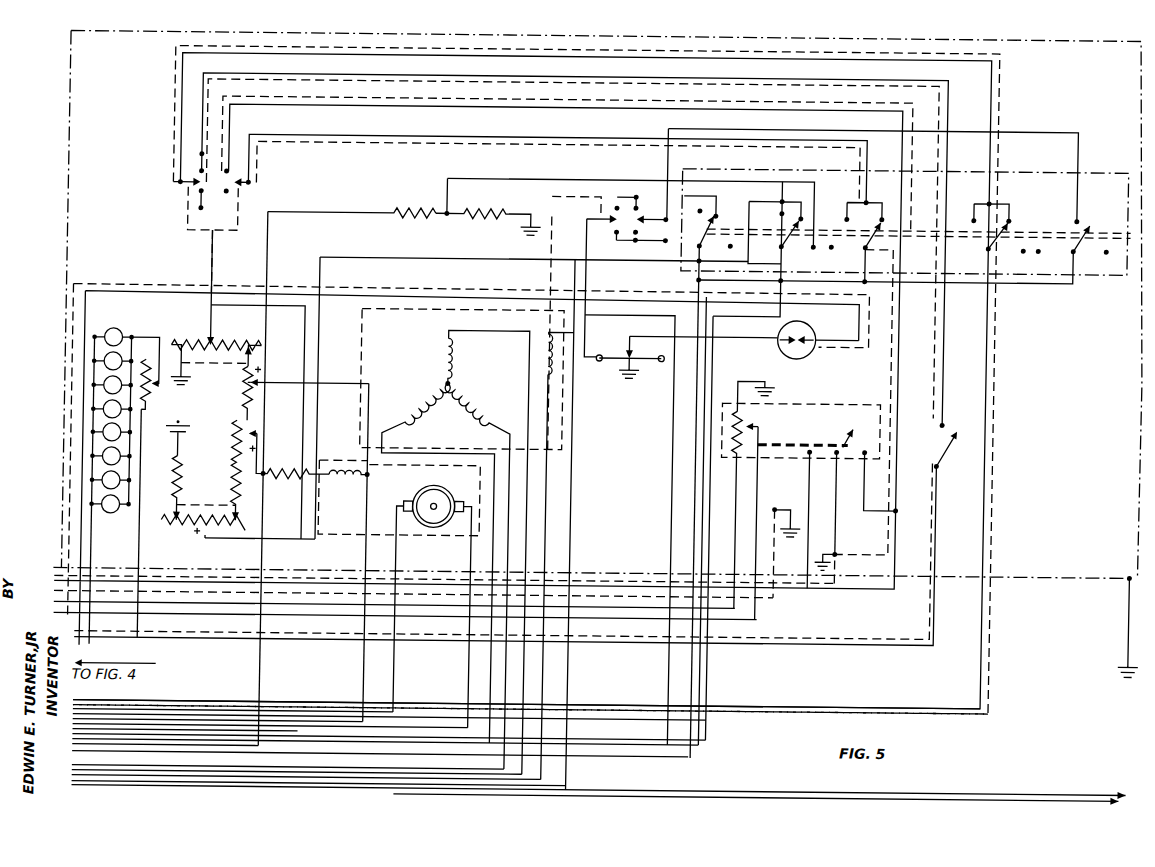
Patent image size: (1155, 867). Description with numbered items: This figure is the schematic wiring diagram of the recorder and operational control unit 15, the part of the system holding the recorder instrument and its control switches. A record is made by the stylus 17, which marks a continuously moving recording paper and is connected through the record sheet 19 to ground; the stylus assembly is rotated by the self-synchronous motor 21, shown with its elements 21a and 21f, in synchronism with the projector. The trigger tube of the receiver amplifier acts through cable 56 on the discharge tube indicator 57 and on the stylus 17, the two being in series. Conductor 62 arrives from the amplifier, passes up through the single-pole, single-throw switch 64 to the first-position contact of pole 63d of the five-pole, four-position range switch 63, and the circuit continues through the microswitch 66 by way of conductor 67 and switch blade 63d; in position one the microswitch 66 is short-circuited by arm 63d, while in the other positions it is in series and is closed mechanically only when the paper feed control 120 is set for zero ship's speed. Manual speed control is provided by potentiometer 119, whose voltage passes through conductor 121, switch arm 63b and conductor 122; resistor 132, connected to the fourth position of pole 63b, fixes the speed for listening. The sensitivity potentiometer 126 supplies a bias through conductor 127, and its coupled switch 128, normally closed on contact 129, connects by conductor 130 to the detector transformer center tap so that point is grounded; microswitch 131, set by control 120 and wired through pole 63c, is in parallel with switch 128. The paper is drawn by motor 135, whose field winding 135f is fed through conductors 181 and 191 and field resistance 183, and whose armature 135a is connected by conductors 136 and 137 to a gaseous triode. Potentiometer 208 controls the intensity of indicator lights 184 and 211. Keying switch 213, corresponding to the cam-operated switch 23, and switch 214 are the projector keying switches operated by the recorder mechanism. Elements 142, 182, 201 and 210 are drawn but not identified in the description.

The recorder and operational control unit 15 is at (72, 101).
The stylus 17 is at (626, 345).
The record sheet 19 is at (596, 363).
The self-synchronous motor 21 is at (370, 334).
The motor windings 21a is at (452, 389).
The motor field coil 21f is at (540, 362).
The keying switch 23 is at (270, 752).
The cable 56 is at (76, 541).
The discharge tube indicator 57 is at (792, 358).
The conductor 62 is at (213, 79).
The range switch 63 is at (1085, 183).
The switch arm of range switch 63b is at (784, 240).
The range switch pole 63c is at (866, 250).
The switch blade of range switch 63d is at (995, 232).
The single pole, single throw switch 64 is at (524, 359).
The microswitch 66 is at (183, 192).
The conductor 67 is at (178, 75).
The potentiometer 119 is at (198, 505).
The paper feed control 120 is at (226, 372).
The conductor 121 is at (462, 236).
The conductor 122 is at (770, 262).
The potentiometer 126 is at (748, 423).
The conductor 127 is at (759, 506).
The switch 128 is at (848, 431).
The contact 129 is at (864, 455).
The conductor 130 is at (864, 502).
The microswitch 131 is at (244, 188).
The resistor 132 is at (405, 224).
The motor 135 is at (340, 528).
The armature 135a is at (432, 530).
The field winding 135f is at (338, 468).
The conductor 136 is at (398, 673).
The conductor 137 is at (472, 680).
The conductor 142 is at (302, 390).
The conductor 181 is at (372, 548).
The battery 182 is at (188, 430).
The field resistance 183 is at (266, 474).
The indicator lights 184 is at (93, 509).
The conductor 191 is at (267, 517).
The conductor 201 is at (94, 570).
The potentiometer 208 is at (154, 390).
The conductor 210 is at (143, 570).
The indicator lights 211 is at (93, 414).
The keying switch 213 is at (655, 225).
The switch 214 is at (583, 325).